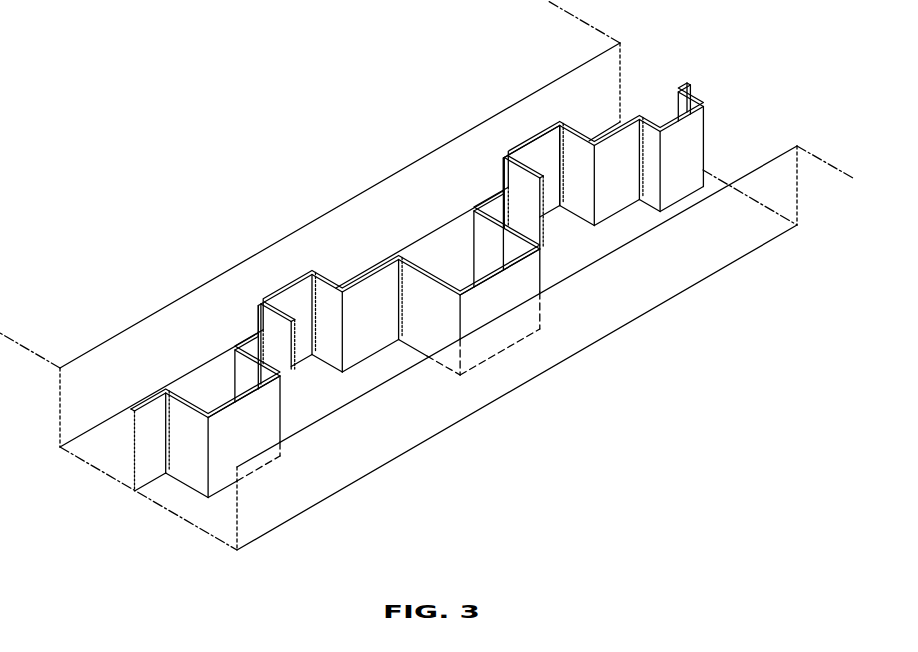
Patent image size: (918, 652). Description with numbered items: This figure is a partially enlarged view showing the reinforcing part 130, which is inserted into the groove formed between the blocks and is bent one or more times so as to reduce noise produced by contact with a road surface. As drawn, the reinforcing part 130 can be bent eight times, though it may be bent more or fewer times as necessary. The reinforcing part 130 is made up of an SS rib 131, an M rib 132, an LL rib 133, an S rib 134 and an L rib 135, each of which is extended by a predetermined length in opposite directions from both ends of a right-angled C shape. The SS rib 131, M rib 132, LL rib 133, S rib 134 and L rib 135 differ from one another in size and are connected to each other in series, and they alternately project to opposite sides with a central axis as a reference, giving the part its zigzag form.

The reinforcing part 130 is at (107, 52).
The SS rib 131 is at (693, 199).
The M rib 132 is at (524, 133).
The LL rib 133 is at (508, 311).
The S rib 134 is at (278, 283).
The L rib 135 is at (281, 445).